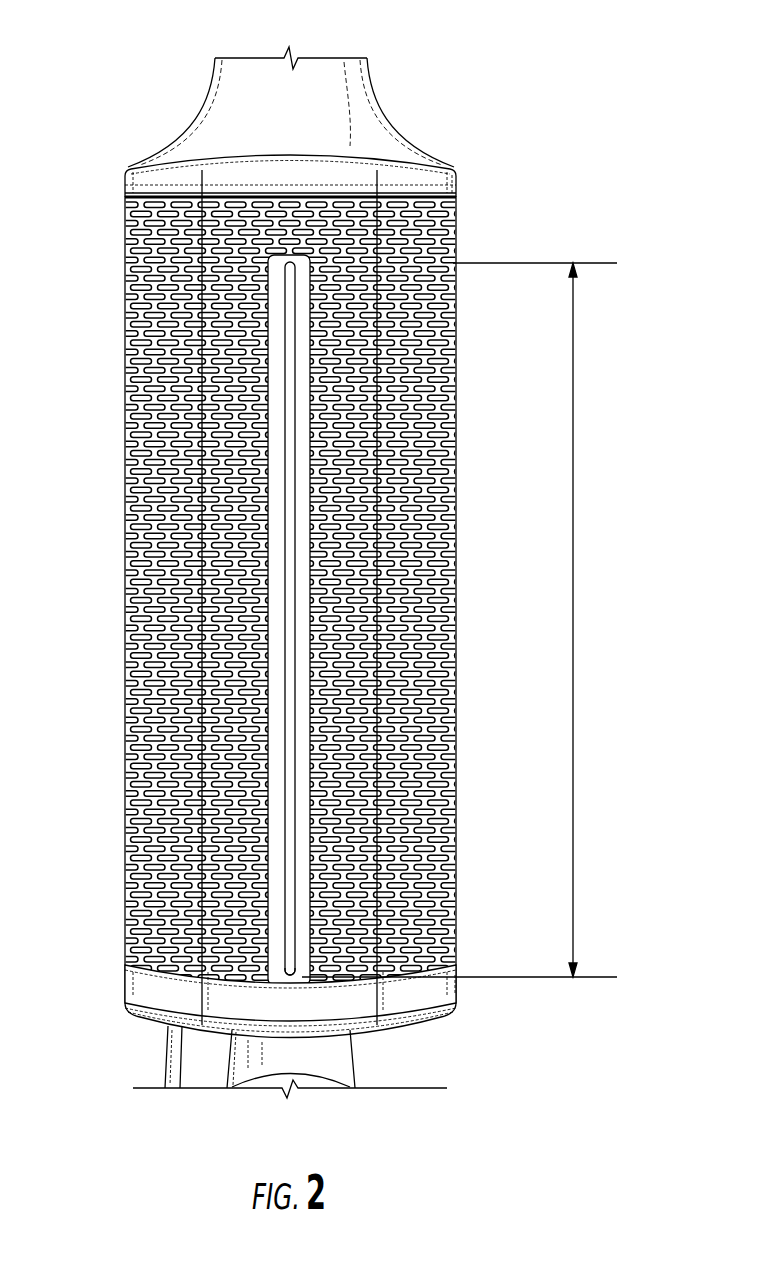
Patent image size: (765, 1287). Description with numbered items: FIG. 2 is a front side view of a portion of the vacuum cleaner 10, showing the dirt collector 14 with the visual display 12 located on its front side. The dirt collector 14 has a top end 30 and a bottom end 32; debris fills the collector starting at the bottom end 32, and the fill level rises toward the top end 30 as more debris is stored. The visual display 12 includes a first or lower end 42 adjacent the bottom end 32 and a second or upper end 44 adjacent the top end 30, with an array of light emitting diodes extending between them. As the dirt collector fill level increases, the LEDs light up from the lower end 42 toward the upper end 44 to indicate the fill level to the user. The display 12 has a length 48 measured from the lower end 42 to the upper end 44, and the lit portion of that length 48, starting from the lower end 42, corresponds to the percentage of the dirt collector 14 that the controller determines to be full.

The vacuum cleaner 10 is at (560, 115).
The visual display 12 is at (287, 490).
The dirt collector 14 is at (155, 468).
The top end 30 is at (125, 213).
The bottom end 32 is at (152, 1020).
The first or lower end 42 is at (292, 980).
The second or upper end 44 is at (268, 262).
The length 48 is at (576, 648).